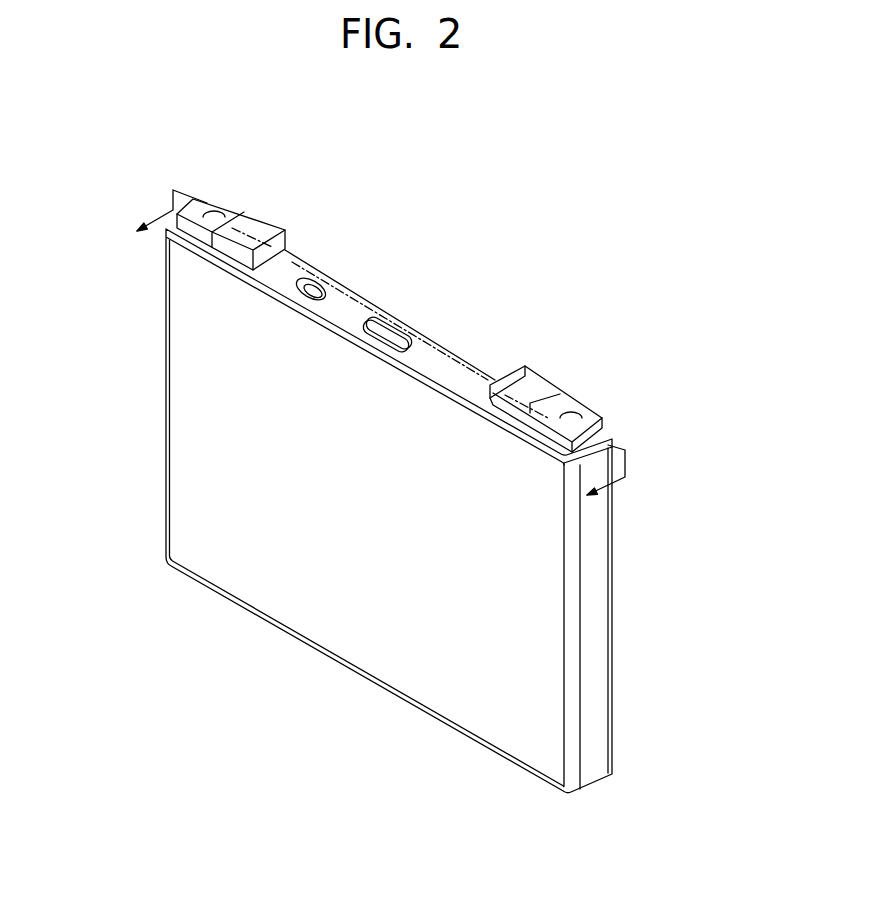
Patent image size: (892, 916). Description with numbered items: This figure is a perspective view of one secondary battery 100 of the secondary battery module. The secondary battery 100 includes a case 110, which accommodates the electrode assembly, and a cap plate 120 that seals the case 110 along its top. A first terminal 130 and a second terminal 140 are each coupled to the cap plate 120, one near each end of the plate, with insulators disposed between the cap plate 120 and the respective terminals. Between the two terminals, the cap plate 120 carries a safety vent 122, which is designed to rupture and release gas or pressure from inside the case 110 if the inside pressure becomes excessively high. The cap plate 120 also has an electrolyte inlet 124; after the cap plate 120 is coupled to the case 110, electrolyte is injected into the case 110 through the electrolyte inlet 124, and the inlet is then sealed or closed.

The secondary battery 100 is at (417, 452).
The case 110 is at (363, 648).
The cap plate 120 is at (389, 335).
The safety vent 122 is at (392, 333).
The electrolyte inlet 124 is at (310, 292).
The first terminal 130 is at (198, 194).
The second terminal 140 is at (612, 408).